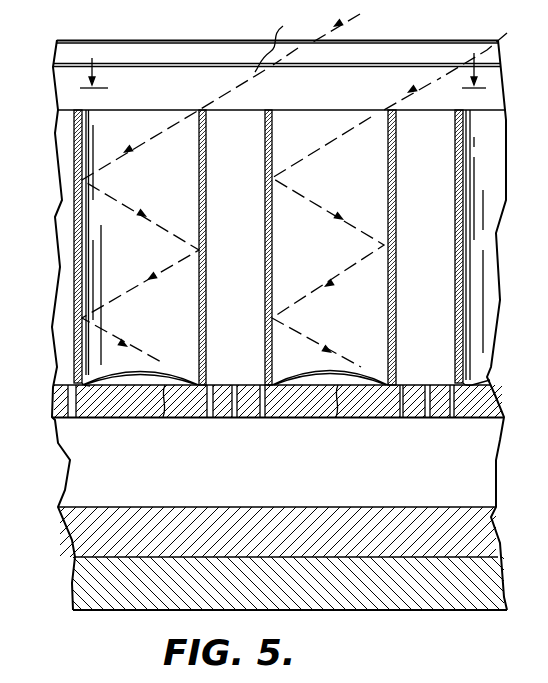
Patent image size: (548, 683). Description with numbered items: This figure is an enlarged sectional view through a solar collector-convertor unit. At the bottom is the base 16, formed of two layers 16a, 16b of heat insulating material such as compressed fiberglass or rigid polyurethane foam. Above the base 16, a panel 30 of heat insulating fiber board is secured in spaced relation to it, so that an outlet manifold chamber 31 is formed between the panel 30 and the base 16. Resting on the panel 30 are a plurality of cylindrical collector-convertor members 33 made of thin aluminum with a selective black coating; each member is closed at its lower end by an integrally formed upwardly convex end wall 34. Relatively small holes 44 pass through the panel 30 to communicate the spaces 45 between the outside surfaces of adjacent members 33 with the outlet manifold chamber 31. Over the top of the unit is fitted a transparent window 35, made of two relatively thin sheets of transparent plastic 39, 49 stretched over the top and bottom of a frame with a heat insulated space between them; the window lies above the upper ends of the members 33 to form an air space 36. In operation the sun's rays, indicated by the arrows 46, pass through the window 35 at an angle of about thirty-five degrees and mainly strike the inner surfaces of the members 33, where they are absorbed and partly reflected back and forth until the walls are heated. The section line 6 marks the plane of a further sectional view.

The transparent plastic sheet 39 is at (266, 36).
The transparent plastic sheet 49 is at (283, 42).
The transparent window 35 is at (417, 28).
The air space 36 is at (63, 94).
The section line 6— 6 is at (283, 82).
The arrows 46 is at (240, 88).
The spaces 45 is at (418, 128).
The cylindrical collector-convertor member 33 is at (267, 155).
The holes 44 is at (243, 385).
The upwardly convex end wall 34 is at (165, 418).
The panel 30 is at (287, 420).
The outlet manifold chamber 31 is at (78, 468).
The layer of heat insulating material 16a is at (283, 507).
The base 16 is at (261, 561).
The layer of heat insulating material 16b is at (407, 608).